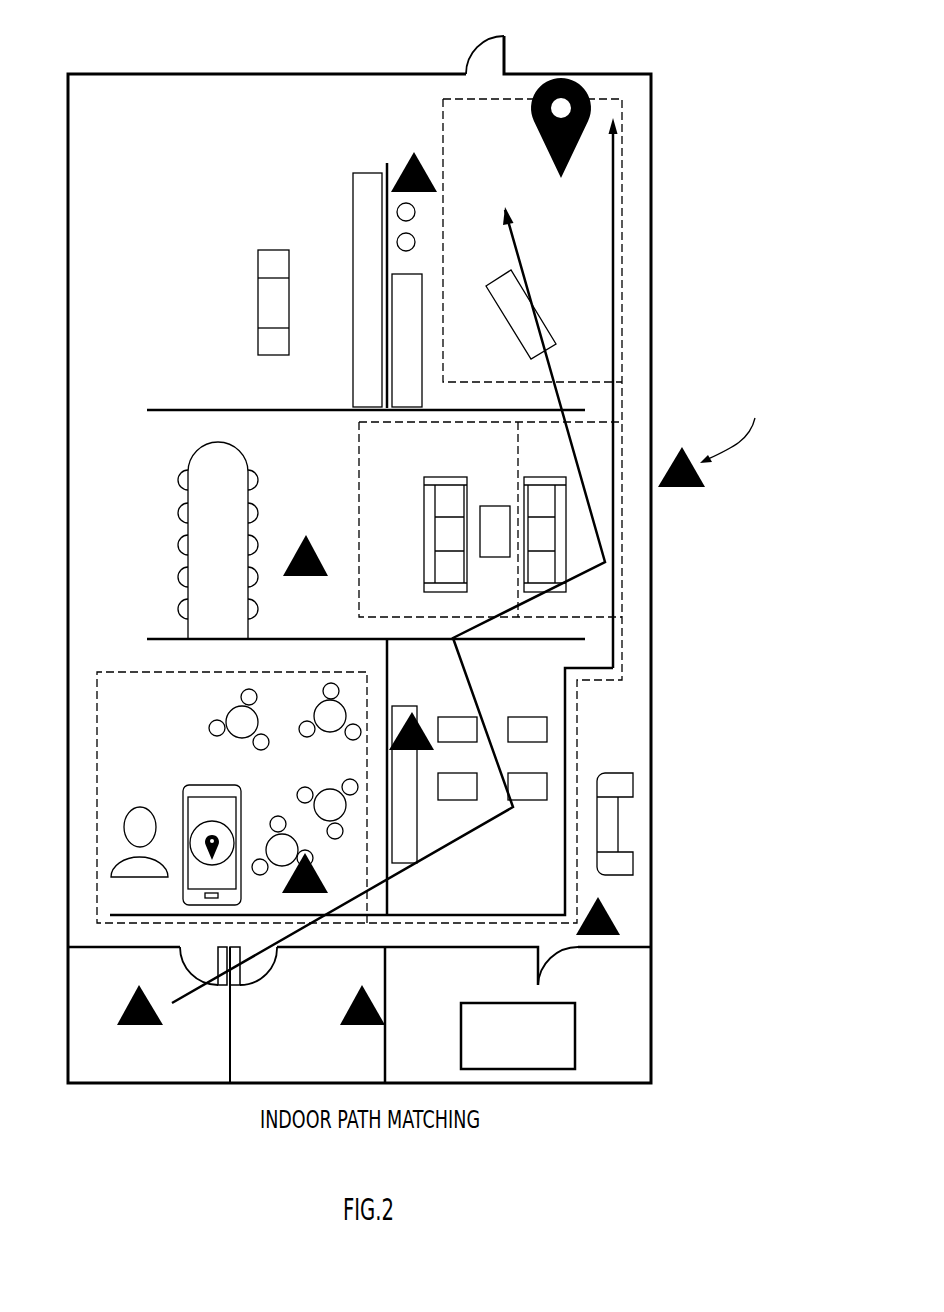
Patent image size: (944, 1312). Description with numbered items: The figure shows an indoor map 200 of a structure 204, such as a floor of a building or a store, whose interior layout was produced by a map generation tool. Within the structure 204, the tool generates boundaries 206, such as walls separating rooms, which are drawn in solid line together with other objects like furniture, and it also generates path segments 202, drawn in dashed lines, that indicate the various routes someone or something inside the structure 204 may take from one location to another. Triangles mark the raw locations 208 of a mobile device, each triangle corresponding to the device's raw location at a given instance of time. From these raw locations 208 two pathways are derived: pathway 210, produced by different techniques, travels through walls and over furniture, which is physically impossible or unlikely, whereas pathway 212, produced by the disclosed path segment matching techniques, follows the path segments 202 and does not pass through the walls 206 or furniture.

The indoor map 200 is at (96, 28).
The path segments 202 is at (177, 673).
The structure 204 is at (652, 222).
The boundaries 206 is at (543, 640).
The raw locations 208 is at (610, 915).
The pathway 210 is at (467, 835).
The pathway 212 is at (613, 268).